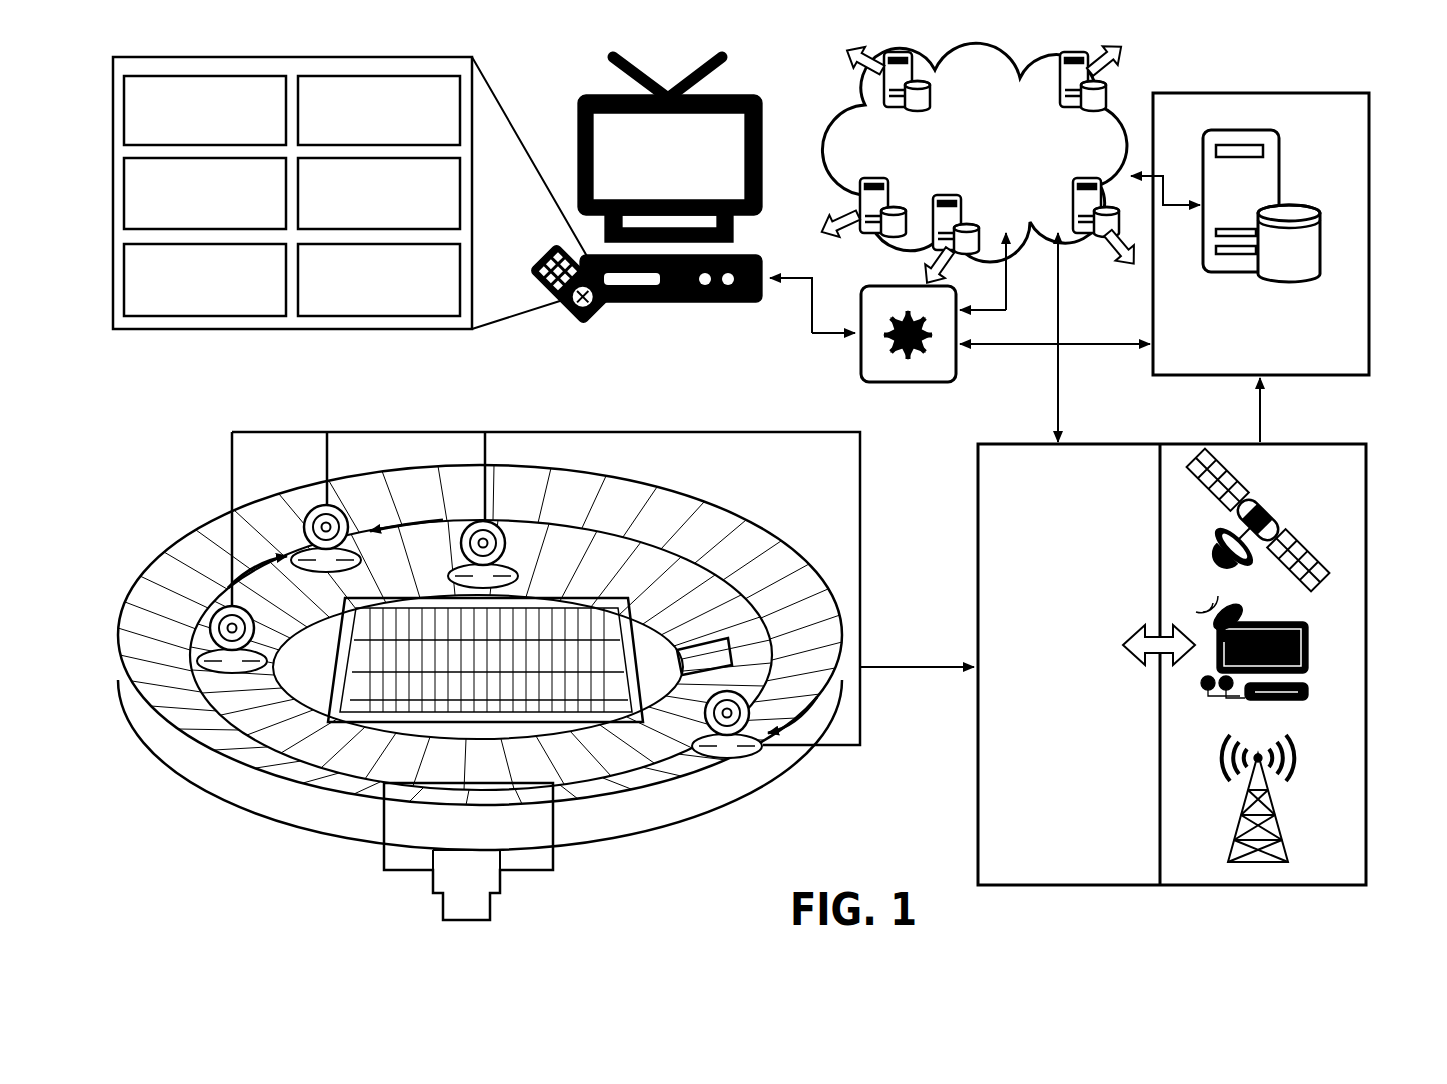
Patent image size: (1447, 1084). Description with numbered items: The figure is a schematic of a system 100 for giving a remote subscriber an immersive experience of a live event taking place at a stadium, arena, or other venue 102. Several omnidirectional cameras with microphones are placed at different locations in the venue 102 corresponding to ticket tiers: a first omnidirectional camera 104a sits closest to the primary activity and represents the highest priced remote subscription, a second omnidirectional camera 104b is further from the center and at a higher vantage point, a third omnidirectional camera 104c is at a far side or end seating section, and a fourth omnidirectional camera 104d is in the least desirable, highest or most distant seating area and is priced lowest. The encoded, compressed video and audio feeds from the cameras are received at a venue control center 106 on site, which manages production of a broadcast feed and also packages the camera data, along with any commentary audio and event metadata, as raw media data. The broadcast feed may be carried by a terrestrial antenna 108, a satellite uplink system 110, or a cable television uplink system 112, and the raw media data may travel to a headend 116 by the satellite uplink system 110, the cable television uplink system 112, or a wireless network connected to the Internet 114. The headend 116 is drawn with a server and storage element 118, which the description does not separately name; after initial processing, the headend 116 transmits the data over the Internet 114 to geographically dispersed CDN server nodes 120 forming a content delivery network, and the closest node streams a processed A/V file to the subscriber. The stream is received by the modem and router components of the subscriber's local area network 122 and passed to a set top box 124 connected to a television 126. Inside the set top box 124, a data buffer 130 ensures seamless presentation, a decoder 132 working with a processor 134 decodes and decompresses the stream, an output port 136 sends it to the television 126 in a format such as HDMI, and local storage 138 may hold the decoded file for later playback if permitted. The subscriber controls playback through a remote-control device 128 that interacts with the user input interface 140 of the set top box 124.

The system 100 is at (1318, 920).
The venue 102 is at (472, 676).
The first omnidirectional camera 104a is at (468, 522).
The second omnidirectional camera 104b is at (305, 516).
The third omnidirectional camera 104c is at (211, 619).
The fourth omnidirectional camera 104d is at (750, 753).
The venue control center 106 is at (1054, 714).
The terrestrial antenna 108 is at (1282, 817).
The satellite uplink system 110 is at (1263, 505).
The cable television uplink system 112 is at (1310, 647).
The Internet 114 is at (988, 166).
The headend 116 is at (1245, 363).
The head end server 118 is at (1322, 227).
The CDN server nodes 120 is at (858, 212).
The local area network 122 is at (915, 383).
The set top box 124 is at (729, 303).
The television 126 is at (767, 112).
The remote-control device 128 is at (594, 320).
The data buffer 130 is at (363, 301).
The decoder 132 is at (363, 216).
The processor 134 is at (189, 216).
The output port 136 is at (189, 301).
The local storage 138 is at (363, 131).
The user input interface 140 is at (189, 131).